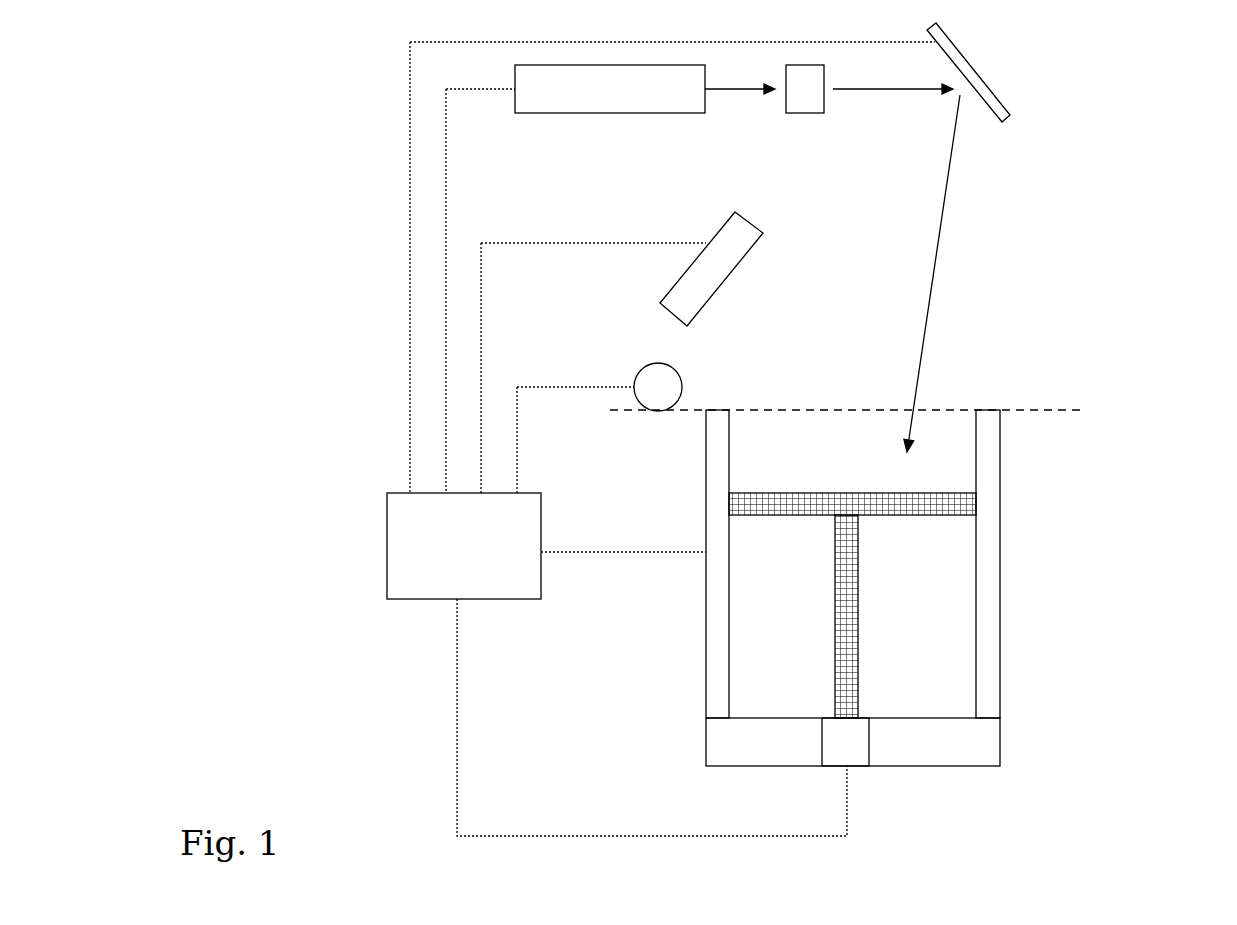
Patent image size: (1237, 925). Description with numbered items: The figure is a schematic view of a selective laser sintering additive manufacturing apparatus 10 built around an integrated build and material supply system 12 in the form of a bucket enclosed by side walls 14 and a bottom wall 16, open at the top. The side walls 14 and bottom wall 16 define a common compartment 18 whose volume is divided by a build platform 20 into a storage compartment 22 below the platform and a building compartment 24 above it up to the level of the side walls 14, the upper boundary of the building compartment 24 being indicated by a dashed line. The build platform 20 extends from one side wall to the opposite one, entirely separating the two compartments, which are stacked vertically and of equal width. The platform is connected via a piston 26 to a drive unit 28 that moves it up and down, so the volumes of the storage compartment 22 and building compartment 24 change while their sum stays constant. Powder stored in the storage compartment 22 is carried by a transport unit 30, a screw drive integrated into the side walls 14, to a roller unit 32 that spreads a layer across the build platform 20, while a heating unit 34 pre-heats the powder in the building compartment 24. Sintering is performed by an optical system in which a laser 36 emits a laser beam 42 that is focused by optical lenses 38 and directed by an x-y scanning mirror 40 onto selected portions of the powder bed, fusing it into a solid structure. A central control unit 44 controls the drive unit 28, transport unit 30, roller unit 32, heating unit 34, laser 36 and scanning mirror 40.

The additive manufacturing apparatus 10 is at (320, 162).
The integrated build and material supply system 12 is at (1107, 385).
The side walls 14 is at (1000, 575).
The bottom wall 16 is at (942, 766).
The common compartment 18 is at (955, 650).
The build platform 20 is at (967, 502).
The storage compartment 22 is at (793, 624).
The building compartment 24 is at (852, 472).
The piston 26 is at (850, 582).
The drive unit 28 is at (857, 757).
The transport unit 30 is at (720, 593).
The roller unit 32 is at (675, 370).
The heating unit 34 is at (677, 280).
The laser 36 is at (600, 113).
The optical lenses 38 is at (790, 113).
The x-y scanning mirror 40 is at (970, 58).
The laser beam 42 is at (933, 282).
The central control unit 44 is at (475, 557).